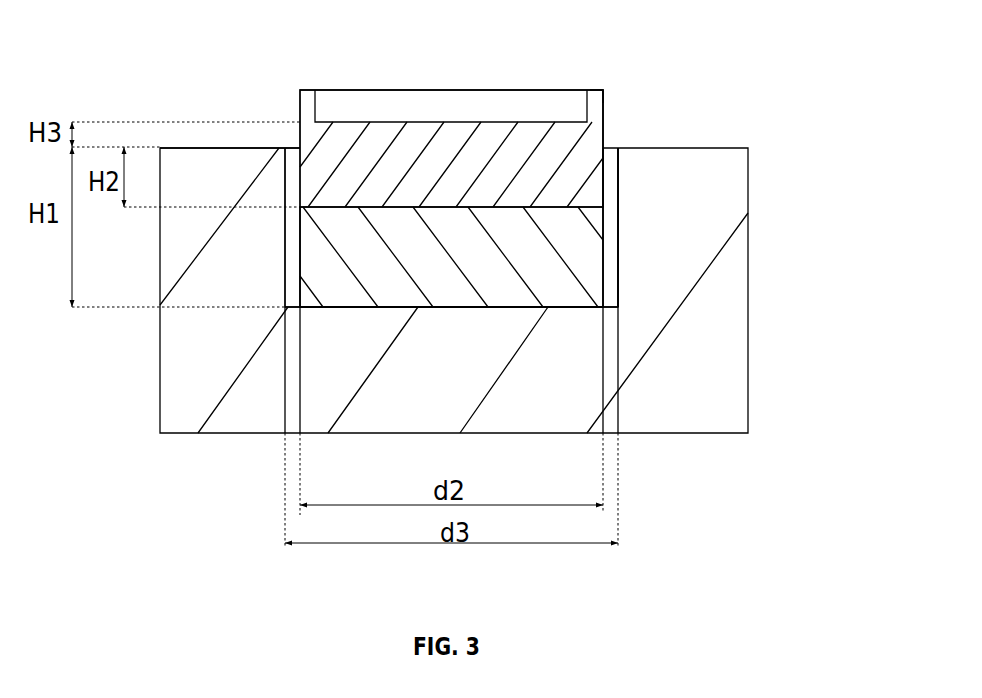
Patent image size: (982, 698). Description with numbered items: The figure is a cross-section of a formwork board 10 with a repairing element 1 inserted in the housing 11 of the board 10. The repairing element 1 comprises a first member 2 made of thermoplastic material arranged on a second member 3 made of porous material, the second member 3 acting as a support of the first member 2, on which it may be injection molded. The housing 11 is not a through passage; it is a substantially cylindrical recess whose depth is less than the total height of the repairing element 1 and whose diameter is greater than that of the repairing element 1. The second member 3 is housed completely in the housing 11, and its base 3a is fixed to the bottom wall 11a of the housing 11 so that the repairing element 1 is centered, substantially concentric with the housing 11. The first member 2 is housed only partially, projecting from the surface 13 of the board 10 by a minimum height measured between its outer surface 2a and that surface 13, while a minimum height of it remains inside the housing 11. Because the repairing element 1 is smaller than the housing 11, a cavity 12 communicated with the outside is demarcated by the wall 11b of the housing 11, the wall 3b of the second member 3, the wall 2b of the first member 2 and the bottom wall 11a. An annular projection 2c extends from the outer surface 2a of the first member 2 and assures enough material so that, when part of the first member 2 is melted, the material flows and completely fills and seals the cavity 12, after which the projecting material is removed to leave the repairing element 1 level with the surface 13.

The repairing element 1 is at (303, 88).
The first member 2 is at (442, 148).
The outer surface 2a is at (473, 130).
The wall 2b is at (608, 157).
The annular projection 2c is at (595, 102).
The second member 3 is at (357, 290).
The base 3a is at (455, 307).
The wall 3b is at (308, 250).
The formwork board 10 is at (665, 402).
The housing 11 is at (620, 257).
The bottom wall 11a is at (517, 307).
The wall 11b is at (618, 292).
The cavity 12 is at (613, 200).
The surface 13 is at (222, 147).